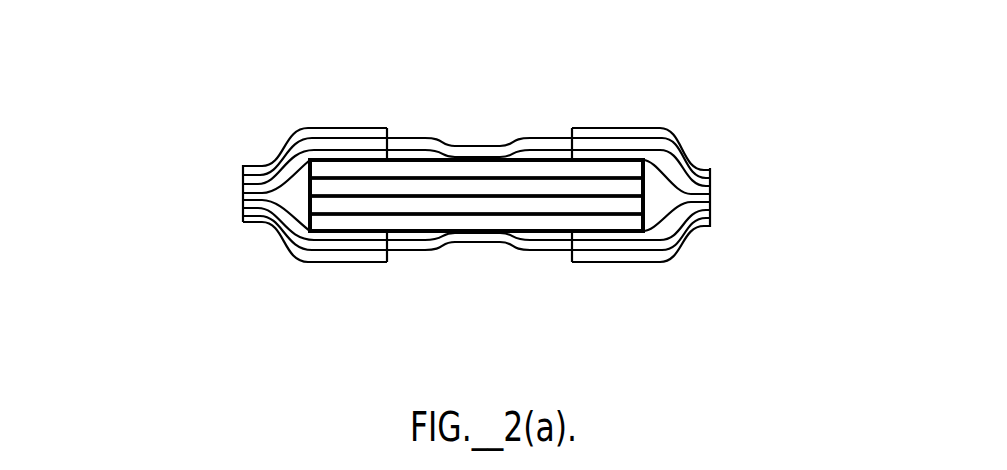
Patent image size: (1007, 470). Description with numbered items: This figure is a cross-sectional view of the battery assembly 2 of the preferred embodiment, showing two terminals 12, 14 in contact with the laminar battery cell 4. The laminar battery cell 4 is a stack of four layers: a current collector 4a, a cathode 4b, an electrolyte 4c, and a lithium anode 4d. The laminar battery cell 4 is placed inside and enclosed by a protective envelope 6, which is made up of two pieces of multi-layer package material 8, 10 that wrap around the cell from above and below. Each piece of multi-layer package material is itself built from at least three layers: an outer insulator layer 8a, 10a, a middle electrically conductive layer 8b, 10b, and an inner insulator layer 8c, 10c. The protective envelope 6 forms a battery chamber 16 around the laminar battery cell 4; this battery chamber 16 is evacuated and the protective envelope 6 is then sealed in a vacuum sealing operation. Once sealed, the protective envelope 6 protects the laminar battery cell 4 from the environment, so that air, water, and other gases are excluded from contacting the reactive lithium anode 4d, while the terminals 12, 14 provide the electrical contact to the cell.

The battery assembly 2 is at (165, 45).
The laminar battery cell 4 is at (655, 190).
The current collector 4a is at (626, 172).
The cathode 4b is at (600, 182).
The electrolyte 4c is at (595, 203).
The lithium anode 4d is at (623, 222).
The protective envelope 6 is at (359, 118).
The multi-layer package material 8 is at (228, 165).
The outer insulator layer 8a is at (263, 163).
The middle electrically conductive layer 8b is at (288, 152).
The inner insulator layer 8c is at (329, 157).
The multi-layer package material 10 is at (228, 197).
The outer insulator layer 10a is at (283, 242).
The middle electrically conductive layer 10b is at (298, 247).
The inner insulator layer 10c is at (314, 240).
The terminal 12 is at (570, 122).
The terminal 14 is at (571, 268).
The battery chamber 16 is at (406, 152).